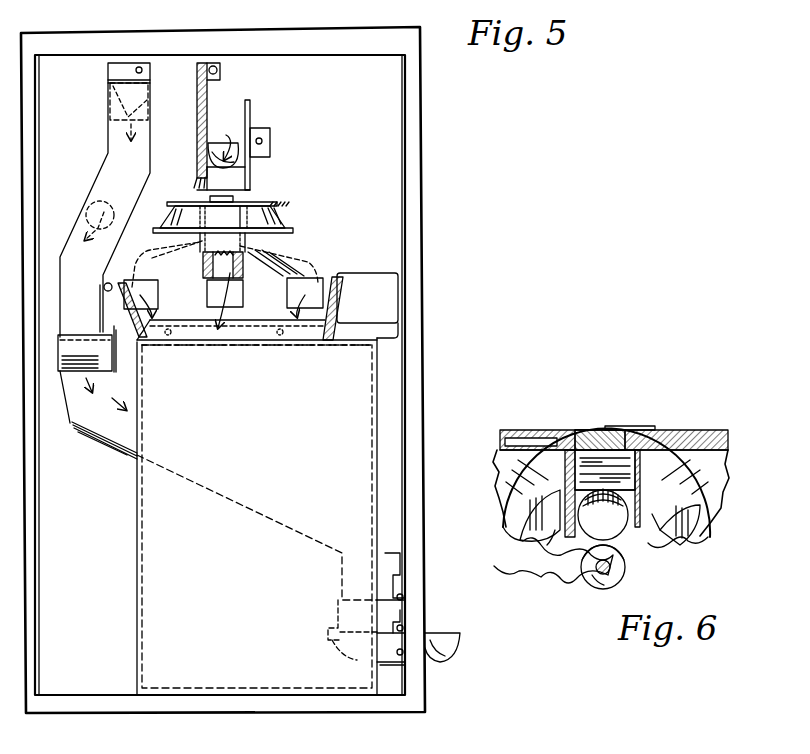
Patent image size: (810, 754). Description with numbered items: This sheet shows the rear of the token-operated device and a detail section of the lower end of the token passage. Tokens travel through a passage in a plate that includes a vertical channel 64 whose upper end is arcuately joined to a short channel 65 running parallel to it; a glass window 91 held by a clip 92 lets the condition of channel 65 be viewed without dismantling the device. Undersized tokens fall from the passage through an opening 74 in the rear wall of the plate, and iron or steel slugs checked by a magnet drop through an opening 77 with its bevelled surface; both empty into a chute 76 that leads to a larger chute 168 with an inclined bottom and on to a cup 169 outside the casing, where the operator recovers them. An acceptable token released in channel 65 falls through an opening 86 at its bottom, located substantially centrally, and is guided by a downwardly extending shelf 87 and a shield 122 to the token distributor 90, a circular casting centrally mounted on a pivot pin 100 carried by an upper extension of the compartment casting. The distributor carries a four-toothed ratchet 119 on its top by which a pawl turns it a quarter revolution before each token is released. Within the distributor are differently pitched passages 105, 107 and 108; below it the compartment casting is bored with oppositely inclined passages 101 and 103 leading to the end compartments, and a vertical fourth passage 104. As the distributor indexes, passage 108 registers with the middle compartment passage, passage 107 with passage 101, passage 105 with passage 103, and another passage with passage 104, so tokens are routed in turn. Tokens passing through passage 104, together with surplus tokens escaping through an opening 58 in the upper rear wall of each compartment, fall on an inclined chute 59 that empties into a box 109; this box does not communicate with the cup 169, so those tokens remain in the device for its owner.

In FIG. 5, the opening 74 is at (110, 96).
In FIG. 5, the chute 76 is at (108, 172).
In FIG. 5, the opening 77 is at (106, 222).
In FIG. 5, the chute 168 is at (122, 445).
In FIG. 5, the shield 122 is at (250, 112).
In FIG. 6, the shield 122 is at (602, 493).
In FIG. 5, the shelf 87 is at (240, 178).
In FIG. 6, the shelf 87 is at (578, 480).
In FIG. 5, the opening 86 is at (214, 144).
In FIG. 5, the token distributor 90 is at (280, 216).
In FIG. 6, the token distributor 90 is at (712, 532).
In FIG. 5, the fourth passage 104 is at (243, 272).
In FIG. 5, the cylindrical passage 101 is at (165, 248).
In FIG. 5, the cylindrical passage 103 is at (300, 258).
In FIG. 5, the opening 58 is at (148, 280).
In FIG. 5, the chute 59 is at (328, 326).
In FIG. 5, the box 109 is at (142, 509).
In FIG. 5, the cup 169 is at (345, 660).
In FIG. 6, the vertical channel 64 is at (536, 430).
In FIG. 6, the glass window 91 is at (582, 430).
In FIG. 6, the short channel 65 is at (612, 430).
In FIG. 6, the clip 92 is at (630, 428).
In FIG. 6, the passage 105 is at (541, 534).
In FIG. 6, the passage 107 is at (661, 522).
In FIG. 6, the passage 108 is at (625, 530).
In FIG. 6, the ratchet 119 is at (592, 582).
In FIG. 6, the pivot pin 100 is at (612, 575).